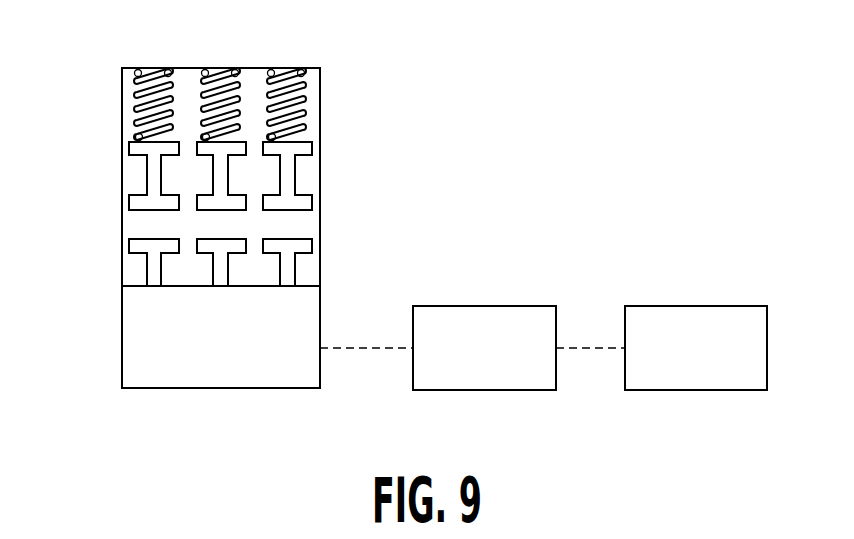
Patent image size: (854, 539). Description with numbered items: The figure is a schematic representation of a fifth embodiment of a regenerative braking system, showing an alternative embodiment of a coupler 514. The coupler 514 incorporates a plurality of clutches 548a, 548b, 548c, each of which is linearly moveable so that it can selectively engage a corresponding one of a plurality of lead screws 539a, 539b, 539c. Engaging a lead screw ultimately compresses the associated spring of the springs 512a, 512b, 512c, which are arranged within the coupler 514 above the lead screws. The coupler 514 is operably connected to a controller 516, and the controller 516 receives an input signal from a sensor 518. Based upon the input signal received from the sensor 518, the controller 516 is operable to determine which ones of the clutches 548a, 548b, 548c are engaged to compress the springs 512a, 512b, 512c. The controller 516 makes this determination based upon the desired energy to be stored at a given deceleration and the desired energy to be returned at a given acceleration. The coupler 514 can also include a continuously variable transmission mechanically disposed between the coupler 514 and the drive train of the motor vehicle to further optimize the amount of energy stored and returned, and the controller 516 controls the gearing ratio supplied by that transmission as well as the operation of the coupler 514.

The spring 512a is at (141, 68).
The spring 512b is at (206, 68).
The spring 512c is at (273, 70).
The lead screw 539a is at (152, 172).
The lead screw 539b is at (220, 182).
The lead screw 539c is at (290, 171).
The clutch 548a is at (137, 246).
The clutch 548b is at (222, 246).
The clutch 548c is at (305, 246).
The coupler 514 is at (142, 362).
The controller 516 is at (433, 390).
The sensor 518 is at (647, 390).